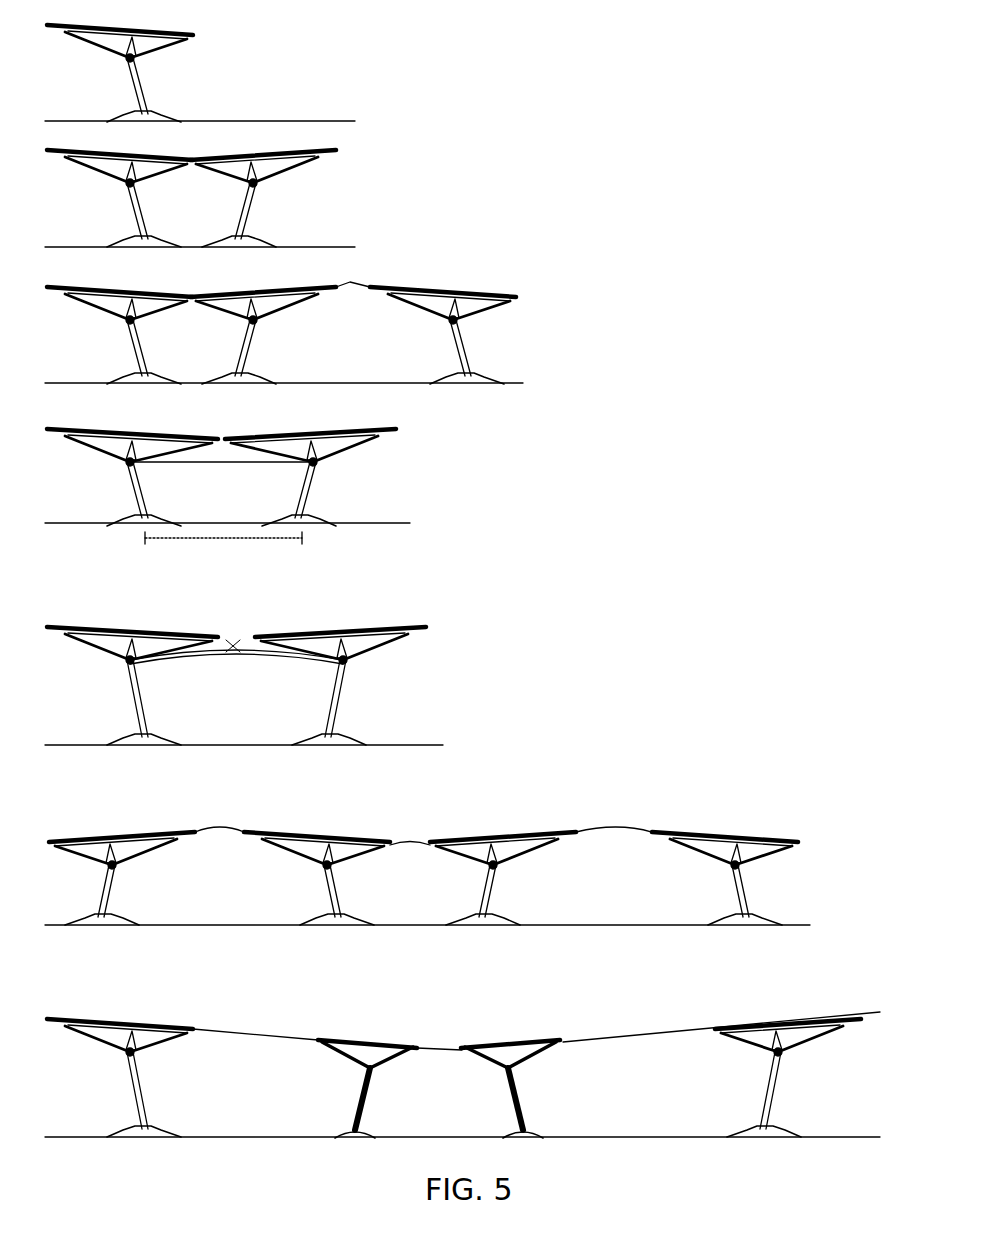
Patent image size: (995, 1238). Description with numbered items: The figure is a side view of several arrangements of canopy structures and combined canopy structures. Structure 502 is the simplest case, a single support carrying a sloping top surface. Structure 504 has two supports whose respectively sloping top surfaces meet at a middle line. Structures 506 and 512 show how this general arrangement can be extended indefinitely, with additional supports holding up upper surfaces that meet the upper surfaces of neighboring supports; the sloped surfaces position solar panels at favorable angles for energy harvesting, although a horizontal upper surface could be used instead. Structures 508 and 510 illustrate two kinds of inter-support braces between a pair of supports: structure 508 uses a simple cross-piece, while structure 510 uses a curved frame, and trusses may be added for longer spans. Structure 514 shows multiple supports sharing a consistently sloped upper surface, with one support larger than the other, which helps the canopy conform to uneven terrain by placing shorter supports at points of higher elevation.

The structure 502 is at (143, 80).
The structure 504 is at (260, 202).
The structure 506 is at (467, 340).
The structure 508 is at (312, 483).
The structure 510 is at (352, 685).
The structure 512 is at (657, 830).
The structure 514 is at (377, 1042).